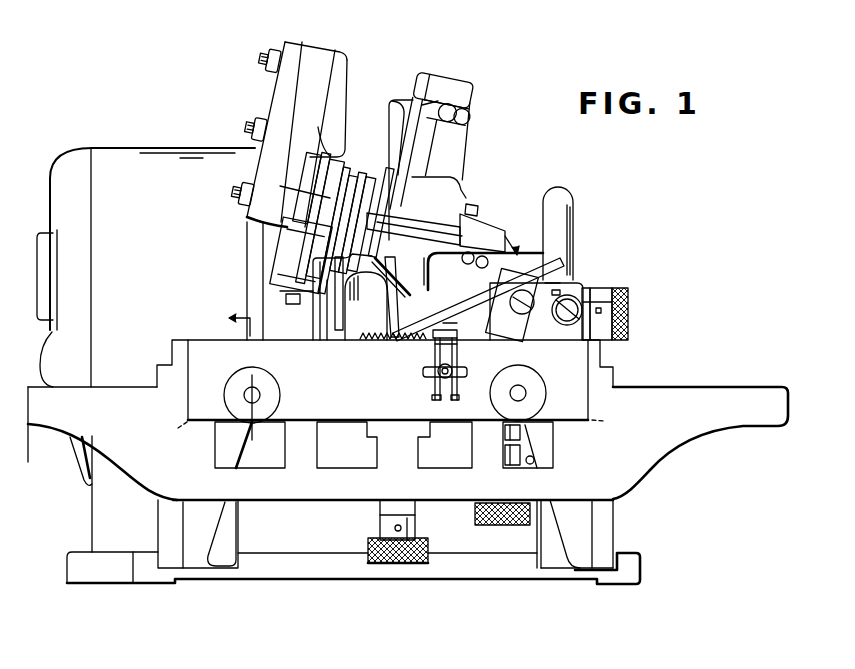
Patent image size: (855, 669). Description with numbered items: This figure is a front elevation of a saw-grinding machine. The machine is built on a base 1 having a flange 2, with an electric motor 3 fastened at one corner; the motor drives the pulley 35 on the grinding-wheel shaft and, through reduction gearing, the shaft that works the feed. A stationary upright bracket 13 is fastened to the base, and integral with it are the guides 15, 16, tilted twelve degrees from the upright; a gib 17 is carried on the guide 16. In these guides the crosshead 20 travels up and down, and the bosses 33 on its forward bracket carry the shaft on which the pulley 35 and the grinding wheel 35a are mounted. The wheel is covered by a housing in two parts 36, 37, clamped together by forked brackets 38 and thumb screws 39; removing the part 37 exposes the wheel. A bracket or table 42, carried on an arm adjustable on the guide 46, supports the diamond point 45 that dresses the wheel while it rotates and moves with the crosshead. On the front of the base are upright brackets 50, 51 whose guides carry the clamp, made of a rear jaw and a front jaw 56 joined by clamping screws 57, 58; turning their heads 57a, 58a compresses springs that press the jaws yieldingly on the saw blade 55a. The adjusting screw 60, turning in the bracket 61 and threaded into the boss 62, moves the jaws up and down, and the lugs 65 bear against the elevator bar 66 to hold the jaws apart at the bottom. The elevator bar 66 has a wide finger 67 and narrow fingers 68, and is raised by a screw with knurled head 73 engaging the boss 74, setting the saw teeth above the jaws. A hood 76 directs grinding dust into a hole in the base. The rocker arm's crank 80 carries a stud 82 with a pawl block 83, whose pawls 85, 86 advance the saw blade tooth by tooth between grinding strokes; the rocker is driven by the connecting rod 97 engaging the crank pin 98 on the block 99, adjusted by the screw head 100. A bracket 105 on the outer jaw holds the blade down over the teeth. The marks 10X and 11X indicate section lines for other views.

The base 1 is at (98, 514).
The flange 2 is at (74, 562).
The electric motor 3 is at (101, 160).
The stationary upright bracket 13 is at (256, 259).
The guide 15 is at (443, 72).
The guide 16 is at (293, 50).
The gib 17 is at (322, 53).
The crosshead 20 is at (392, 133).
The bosses 33 is at (387, 173).
The pulley 35 is at (342, 248).
The grinding wheel 35a is at (385, 300).
The housing part 36 is at (428, 148).
The housing part 37 is at (449, 168).
The brackets 38 is at (430, 108).
The thumb screws 39 is at (469, 113).
The bracket or table 42 is at (453, 242).
The diamond point 45 is at (478, 221).
The guide 46 is at (478, 212).
The upright bracket 50 is at (610, 380).
The upright bracket 51 is at (157, 375).
The saw blade 55a is at (366, 341).
The front jaw 56 is at (187, 393).
The clamping screw 57 is at (258, 390).
The screw head 57a is at (279, 411).
The clamping screw 58 is at (524, 389).
The screw head 58a is at (495, 402).
The adjusting screw 60 is at (510, 527).
The bracket 61 is at (508, 464).
The boss 62 is at (521, 433).
The lugs 65 is at (393, 426).
The elevator bar 66 is at (665, 440).
The wide finger 67 is at (388, 445).
The narrow fingers 68 is at (298, 442).
The knurled head 73 is at (380, 566).
The boss 74 is at (382, 508).
The hood 76 is at (330, 306).
The crank 80 is at (522, 330).
The stud 82 is at (513, 311).
The pawl block 83 is at (494, 285).
The pawl 85 is at (418, 333).
The pawl 86 is at (457, 323).
The link or connecting rod 97 is at (566, 284).
The crank pin 98 is at (582, 298).
The block 99 is at (584, 290).
The screw head 100 is at (629, 318).
The bracket 105 is at (440, 350).
The section line 10X is at (402, 215).
The section line 11X is at (237, 376).